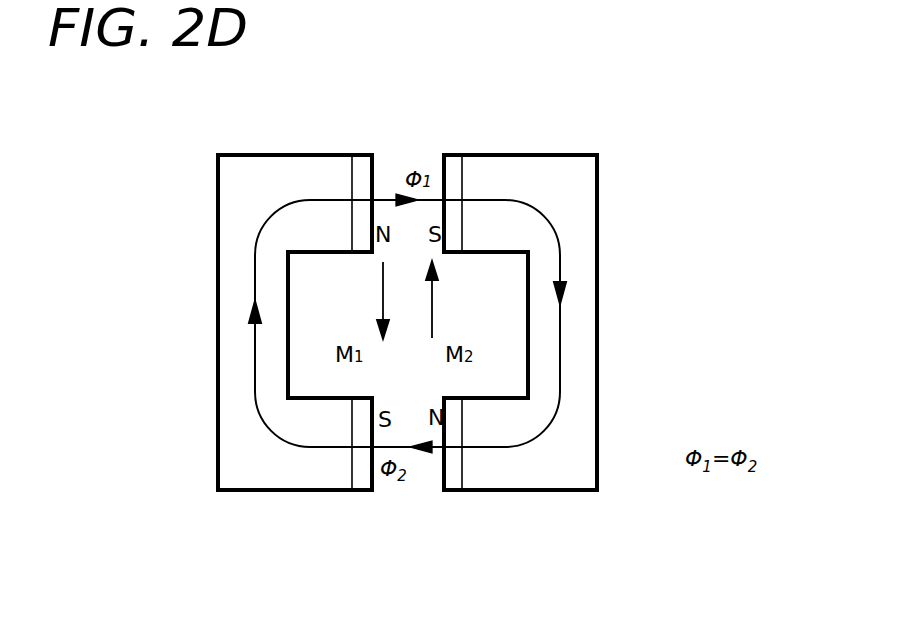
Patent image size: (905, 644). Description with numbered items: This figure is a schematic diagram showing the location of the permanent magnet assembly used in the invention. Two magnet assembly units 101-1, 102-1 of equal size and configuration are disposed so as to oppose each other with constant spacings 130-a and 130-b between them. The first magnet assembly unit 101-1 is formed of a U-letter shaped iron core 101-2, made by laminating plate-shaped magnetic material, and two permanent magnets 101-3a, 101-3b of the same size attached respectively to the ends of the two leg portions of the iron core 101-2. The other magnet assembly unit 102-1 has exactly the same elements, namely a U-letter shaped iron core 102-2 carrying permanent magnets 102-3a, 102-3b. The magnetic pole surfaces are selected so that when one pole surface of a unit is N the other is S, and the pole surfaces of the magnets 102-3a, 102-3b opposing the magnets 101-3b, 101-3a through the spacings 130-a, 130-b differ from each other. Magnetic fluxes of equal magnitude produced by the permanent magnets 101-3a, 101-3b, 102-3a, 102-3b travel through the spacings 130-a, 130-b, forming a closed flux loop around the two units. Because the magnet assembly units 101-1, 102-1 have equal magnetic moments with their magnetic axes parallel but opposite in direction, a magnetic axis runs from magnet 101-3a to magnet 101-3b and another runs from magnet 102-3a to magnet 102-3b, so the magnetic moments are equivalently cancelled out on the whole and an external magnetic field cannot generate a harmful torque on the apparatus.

The magnet assembly unit 101-1 is at (140, 182).
The iron core 101-2 is at (240, 318).
The permanent magnet 101-3a is at (362, 160).
The permanent magnet 101-3b is at (365, 473).
The magnet assembly unit 102-1 is at (762, 370).
The iron core 102-2 is at (580, 260).
The permanent magnet 102-3a is at (454, 472).
The permanent magnet 102-3b is at (453, 160).
The spacing 130-a is at (392, 185).
The spacing 130-b is at (425, 463).